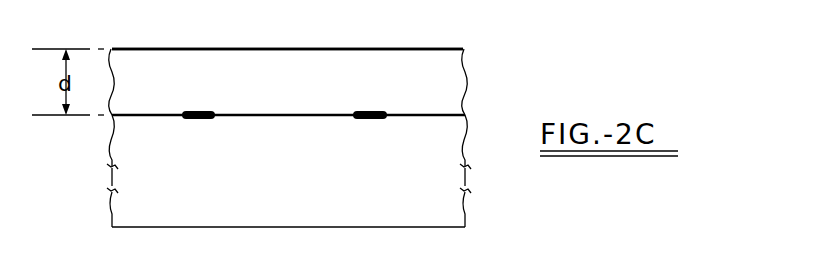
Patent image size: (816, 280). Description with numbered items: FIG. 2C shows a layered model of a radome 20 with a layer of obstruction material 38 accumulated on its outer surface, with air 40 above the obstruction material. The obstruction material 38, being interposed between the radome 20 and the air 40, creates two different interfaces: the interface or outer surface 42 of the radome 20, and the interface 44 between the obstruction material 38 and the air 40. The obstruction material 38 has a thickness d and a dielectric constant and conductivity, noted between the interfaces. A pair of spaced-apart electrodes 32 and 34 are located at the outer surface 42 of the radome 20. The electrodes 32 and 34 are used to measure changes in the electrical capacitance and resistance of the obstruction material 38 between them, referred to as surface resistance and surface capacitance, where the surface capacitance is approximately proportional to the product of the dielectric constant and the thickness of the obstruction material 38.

The radome 20 is at (468, 215).
The electrode 32 is at (197, 119).
The electrode 34 is at (370, 119).
The obstruction material 38 is at (189, 68).
The air 40 is at (287, 30).
The interface or outer surface of the radome 42 is at (452, 114).
The interface 44 is at (427, 49).